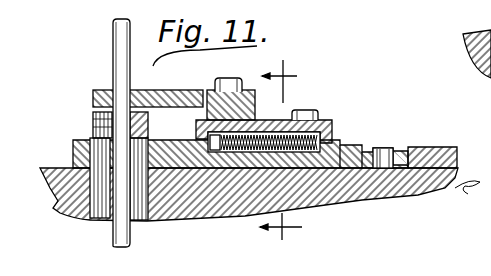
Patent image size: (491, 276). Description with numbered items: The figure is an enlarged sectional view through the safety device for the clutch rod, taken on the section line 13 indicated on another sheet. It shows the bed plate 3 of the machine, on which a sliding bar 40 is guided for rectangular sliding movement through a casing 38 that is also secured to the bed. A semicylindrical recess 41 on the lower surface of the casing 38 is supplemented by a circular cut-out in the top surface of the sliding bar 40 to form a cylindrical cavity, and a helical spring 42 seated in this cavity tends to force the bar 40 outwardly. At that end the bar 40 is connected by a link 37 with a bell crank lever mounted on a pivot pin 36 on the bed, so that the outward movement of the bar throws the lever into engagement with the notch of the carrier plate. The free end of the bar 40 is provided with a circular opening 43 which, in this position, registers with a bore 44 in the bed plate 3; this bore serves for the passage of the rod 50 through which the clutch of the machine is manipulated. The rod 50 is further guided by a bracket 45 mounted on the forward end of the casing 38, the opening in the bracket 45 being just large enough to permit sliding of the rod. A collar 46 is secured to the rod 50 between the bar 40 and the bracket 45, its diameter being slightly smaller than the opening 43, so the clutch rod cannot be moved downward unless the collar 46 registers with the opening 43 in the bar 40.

The bed plate 3 is at (230, 219).
The section line 13 is at (281, 148).
The pivot pin 36 is at (477, 39).
The link 37 is at (463, 140).
The casing 38 is at (333, 121).
The sliding bar 40 is at (361, 144).
The semicylindrical recess 41 is at (204, 89).
The helical spring 42 is at (313, 110).
The circular opening 43 is at (73, 147).
The bore 44 is at (77, 205).
The bracket 45 is at (108, 92).
The collar 46 is at (96, 111).
The clutch rod 50 is at (112, 239).